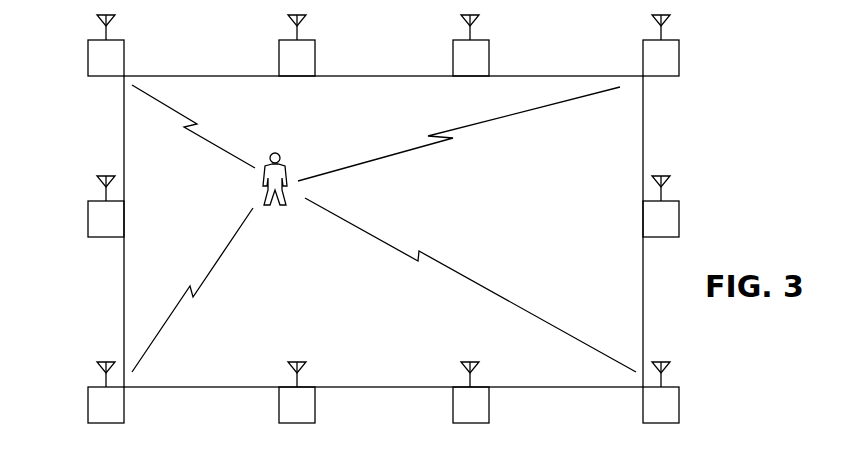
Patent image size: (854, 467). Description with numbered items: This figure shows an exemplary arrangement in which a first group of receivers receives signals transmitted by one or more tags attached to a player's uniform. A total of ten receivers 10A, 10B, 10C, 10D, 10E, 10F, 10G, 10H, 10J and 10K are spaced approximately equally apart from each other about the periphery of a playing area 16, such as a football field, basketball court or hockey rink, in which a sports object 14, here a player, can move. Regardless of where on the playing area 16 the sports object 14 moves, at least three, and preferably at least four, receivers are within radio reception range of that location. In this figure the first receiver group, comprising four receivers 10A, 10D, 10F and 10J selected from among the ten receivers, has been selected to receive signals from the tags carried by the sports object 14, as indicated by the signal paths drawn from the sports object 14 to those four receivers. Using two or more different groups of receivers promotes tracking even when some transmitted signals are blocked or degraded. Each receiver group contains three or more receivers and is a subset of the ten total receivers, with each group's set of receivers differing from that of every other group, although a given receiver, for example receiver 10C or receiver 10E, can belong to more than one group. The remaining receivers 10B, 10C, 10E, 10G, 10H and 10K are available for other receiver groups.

The receiver 10A is at (88, 57).
The receiver 10B is at (316, 50).
The receiver 10C is at (453, 52).
The receiver 10D is at (679, 57).
The receiver 10E is at (679, 222).
The receiver 10F is at (679, 402).
The receiver 10G is at (488, 400).
The receiver 10H is at (279, 398).
The receiver 10J is at (88, 400).
The receiver 10K is at (88, 225).
The sports object 14 is at (285, 168).
The playing area 16 is at (495, 214).